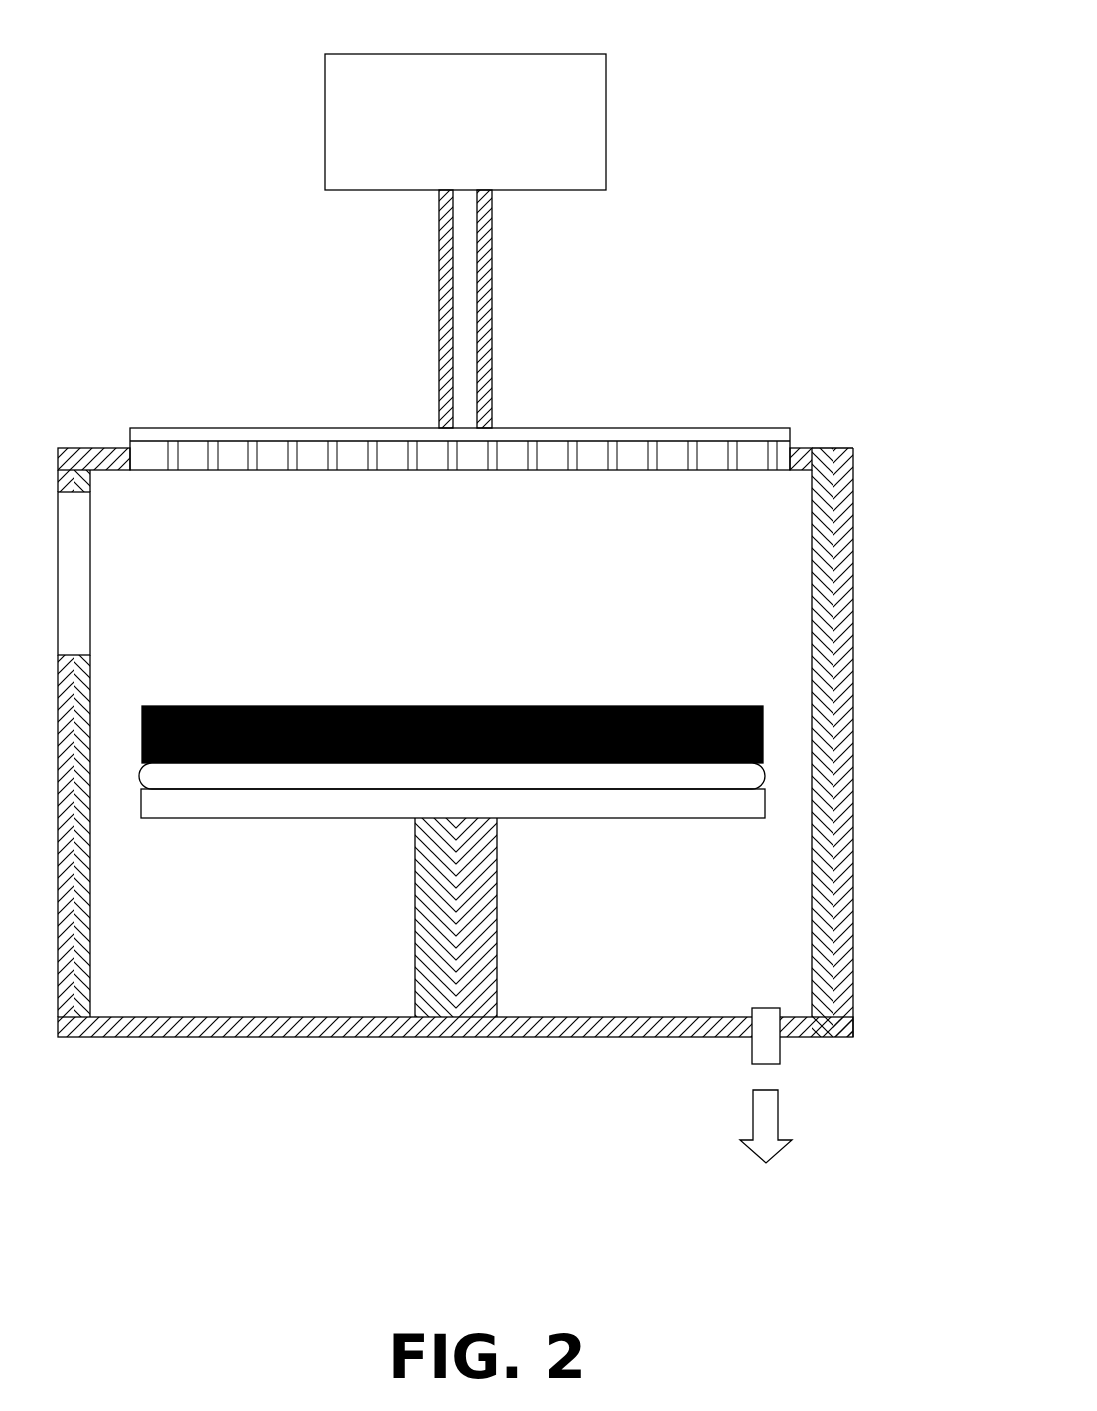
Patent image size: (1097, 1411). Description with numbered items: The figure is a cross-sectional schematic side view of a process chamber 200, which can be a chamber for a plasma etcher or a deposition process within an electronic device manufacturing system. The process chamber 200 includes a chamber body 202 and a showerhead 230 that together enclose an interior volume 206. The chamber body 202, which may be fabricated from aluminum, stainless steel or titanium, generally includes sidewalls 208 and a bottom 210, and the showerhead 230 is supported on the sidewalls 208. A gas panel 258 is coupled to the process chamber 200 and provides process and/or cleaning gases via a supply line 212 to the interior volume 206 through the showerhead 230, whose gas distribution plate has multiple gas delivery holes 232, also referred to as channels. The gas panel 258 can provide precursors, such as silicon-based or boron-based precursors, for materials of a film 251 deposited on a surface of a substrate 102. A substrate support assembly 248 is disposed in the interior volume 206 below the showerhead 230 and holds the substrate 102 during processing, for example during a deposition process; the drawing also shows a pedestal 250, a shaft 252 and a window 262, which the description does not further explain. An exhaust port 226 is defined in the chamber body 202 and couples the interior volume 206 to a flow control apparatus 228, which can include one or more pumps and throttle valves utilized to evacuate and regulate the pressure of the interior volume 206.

The process chamber 200 is at (842, 74).
The gas panel 258 is at (606, 125).
The supply line 212 is at (492, 285).
The showerhead 230 is at (508, 470).
The gas delivery holes 232 is at (720, 455).
The chamber body 202 is at (886, 531).
The sidewalls 208 is at (854, 698).
The bottom 210 is at (176, 1038).
The interior volume 206 is at (748, 506).
The window 262 is at (90, 583).
The film 251 is at (482, 706).
The substrate 102 is at (762, 777).
The substrate support pedestal 250 is at (208, 818).
The shaft 252 is at (499, 905).
The substrate support assembly 248 is at (336, 950).
The exhaust port 226 is at (745, 1045).
The flow control apparatus 228 is at (766, 1145).